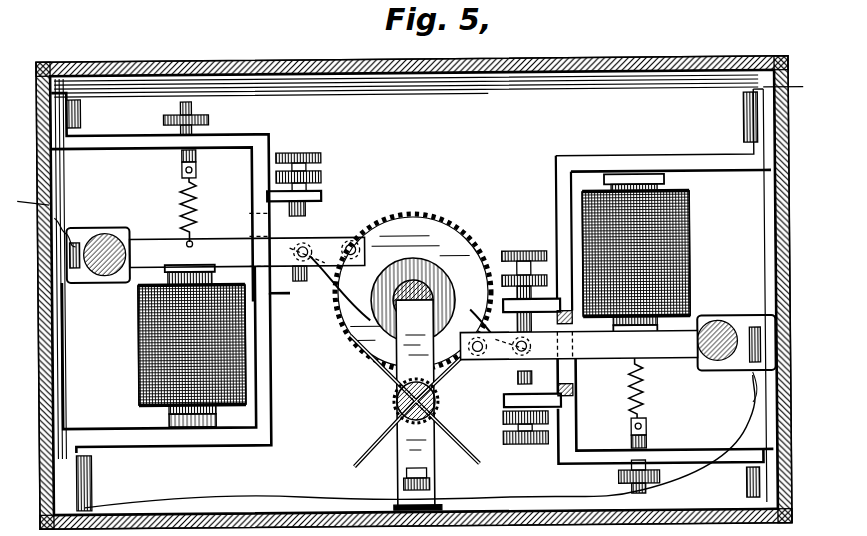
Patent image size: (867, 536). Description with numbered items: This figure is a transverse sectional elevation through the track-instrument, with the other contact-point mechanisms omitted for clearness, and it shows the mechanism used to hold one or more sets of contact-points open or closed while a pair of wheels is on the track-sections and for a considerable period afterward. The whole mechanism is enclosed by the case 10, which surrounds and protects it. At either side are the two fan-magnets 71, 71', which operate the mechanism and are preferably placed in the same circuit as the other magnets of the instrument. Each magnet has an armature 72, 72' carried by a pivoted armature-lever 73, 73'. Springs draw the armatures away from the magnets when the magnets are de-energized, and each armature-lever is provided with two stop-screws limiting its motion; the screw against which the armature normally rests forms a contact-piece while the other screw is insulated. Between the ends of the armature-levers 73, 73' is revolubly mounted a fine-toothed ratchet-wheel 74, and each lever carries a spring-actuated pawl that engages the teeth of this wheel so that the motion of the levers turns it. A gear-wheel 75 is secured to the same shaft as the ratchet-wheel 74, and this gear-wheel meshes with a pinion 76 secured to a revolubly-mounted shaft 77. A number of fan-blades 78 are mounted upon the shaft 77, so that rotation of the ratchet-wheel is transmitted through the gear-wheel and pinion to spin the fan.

The case 10 is at (39, 338).
The fan-magnet 71 is at (648, 244).
The fan-magnet 71' is at (169, 355).
The armature 72 is at (694, 341).
The armature 72' is at (153, 257).
The armature-lever 73 is at (578, 345).
The armature-lever 73' is at (250, 279).
The fine-toothed ratchet-wheel 74 is at (413, 300).
The gear-wheel 75 is at (412, 291).
The pinion 76 is at (396, 404).
The shaft 77 is at (438, 402).
The fan-blades 78 is at (370, 370).